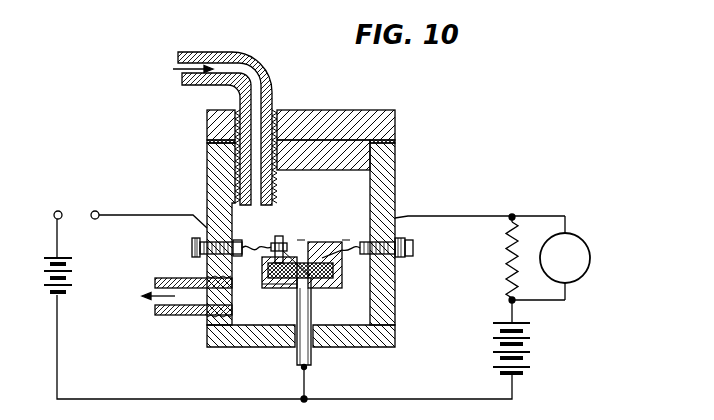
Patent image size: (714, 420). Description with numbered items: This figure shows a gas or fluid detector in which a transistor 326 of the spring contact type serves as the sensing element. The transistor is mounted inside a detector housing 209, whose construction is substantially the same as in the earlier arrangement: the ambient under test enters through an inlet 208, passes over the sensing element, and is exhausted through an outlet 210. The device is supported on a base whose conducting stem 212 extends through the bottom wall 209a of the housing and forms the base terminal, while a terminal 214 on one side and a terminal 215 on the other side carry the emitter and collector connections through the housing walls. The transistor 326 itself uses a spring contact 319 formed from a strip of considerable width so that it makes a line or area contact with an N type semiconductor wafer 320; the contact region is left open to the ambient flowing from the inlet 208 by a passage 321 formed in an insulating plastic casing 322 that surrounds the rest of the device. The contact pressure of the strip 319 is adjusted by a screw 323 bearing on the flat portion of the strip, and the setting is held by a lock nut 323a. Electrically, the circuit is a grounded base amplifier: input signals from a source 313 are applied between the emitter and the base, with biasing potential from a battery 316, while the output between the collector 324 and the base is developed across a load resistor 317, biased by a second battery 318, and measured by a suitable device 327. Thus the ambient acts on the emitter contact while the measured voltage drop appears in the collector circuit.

The inlet 208 is at (273, 92).
The detector housing 209 is at (396, 173).
The bottom wall 209a is at (386, 370).
The outlet 210 is at (188, 316).
The conducting stem 212 is at (312, 292).
The left terminal bolt 214 is at (197, 251).
The terminal 215 is at (398, 257).
The source 313 is at (77, 212).
The battery 316 is at (42, 285).
The load resistor 317 is at (506, 255).
The battery 318 is at (525, 345).
The spring contact 319 is at (302, 237).
The N type semiconductor wafer 320 is at (268, 287).
The passage 321 is at (298, 201).
The insulating plastic casing 322 is at (283, 290).
The screw 323 is at (268, 266).
The lock nut 323a is at (274, 244).
The collector 324 is at (320, 242).
The transistor 326 is at (349, 238).
The measuring device 327 is at (588, 243).